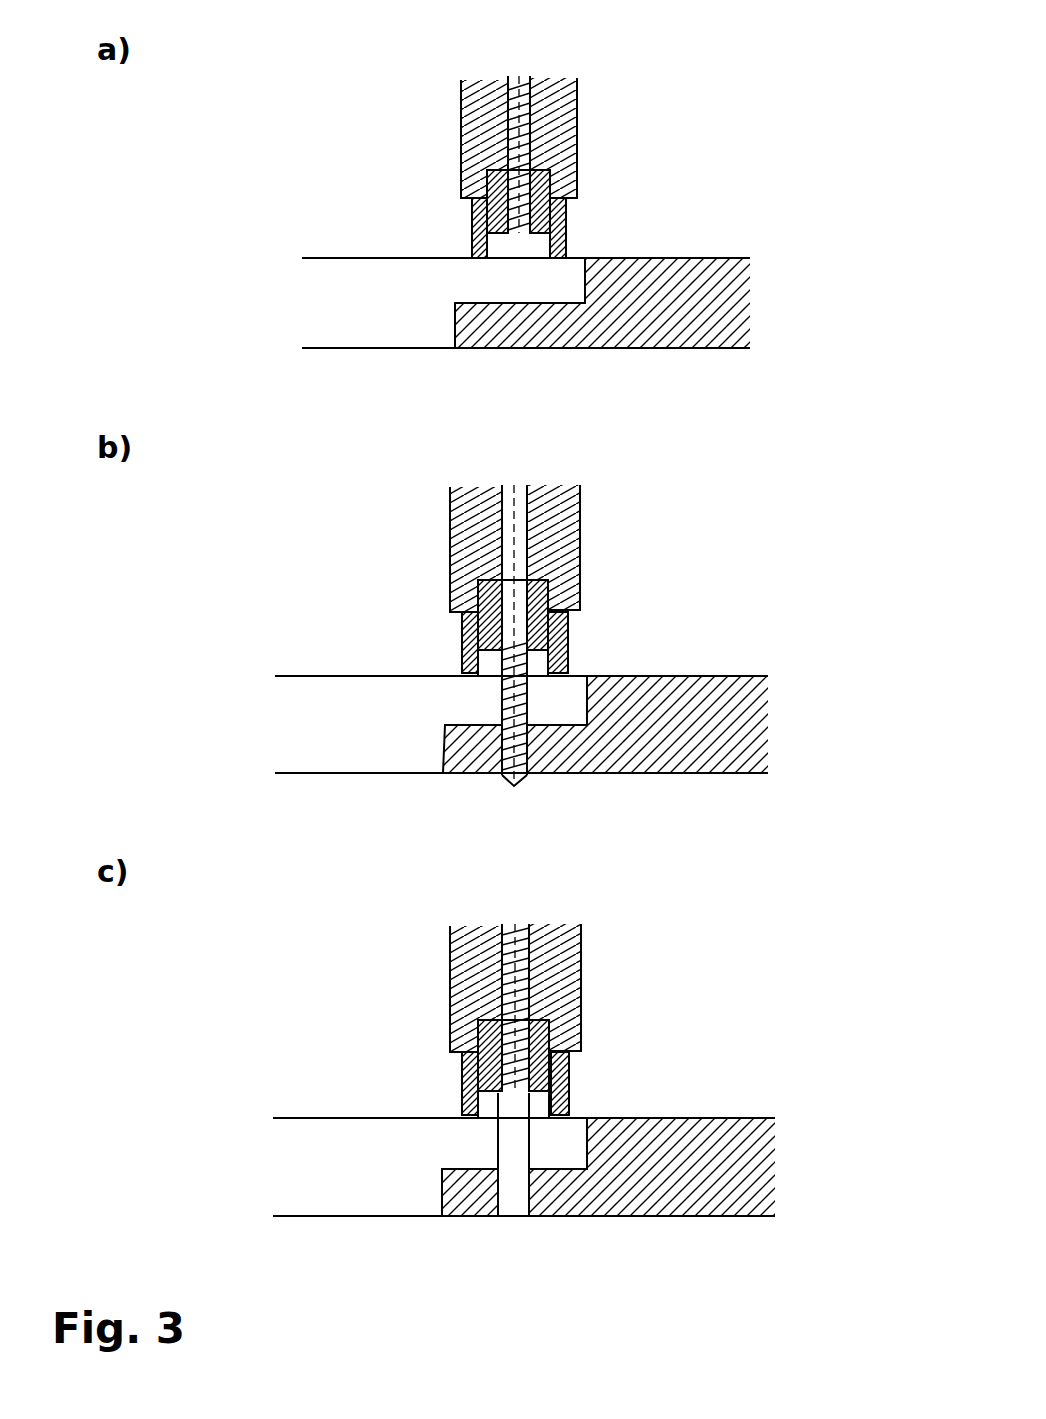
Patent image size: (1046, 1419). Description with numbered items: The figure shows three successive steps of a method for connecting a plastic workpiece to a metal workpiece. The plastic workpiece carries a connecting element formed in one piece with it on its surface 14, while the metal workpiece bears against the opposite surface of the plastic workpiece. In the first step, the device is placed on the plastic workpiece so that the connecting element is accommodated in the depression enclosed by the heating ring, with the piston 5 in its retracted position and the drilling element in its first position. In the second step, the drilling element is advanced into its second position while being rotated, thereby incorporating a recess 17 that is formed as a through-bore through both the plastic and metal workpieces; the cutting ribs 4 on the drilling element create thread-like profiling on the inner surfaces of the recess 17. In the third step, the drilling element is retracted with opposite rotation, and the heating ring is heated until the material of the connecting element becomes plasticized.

The cutting ribs 4 is at (517, 757).
The piston 5 is at (580, 160).
The surface 14 is at (392, 258).
The recess 17 is at (515, 1187).